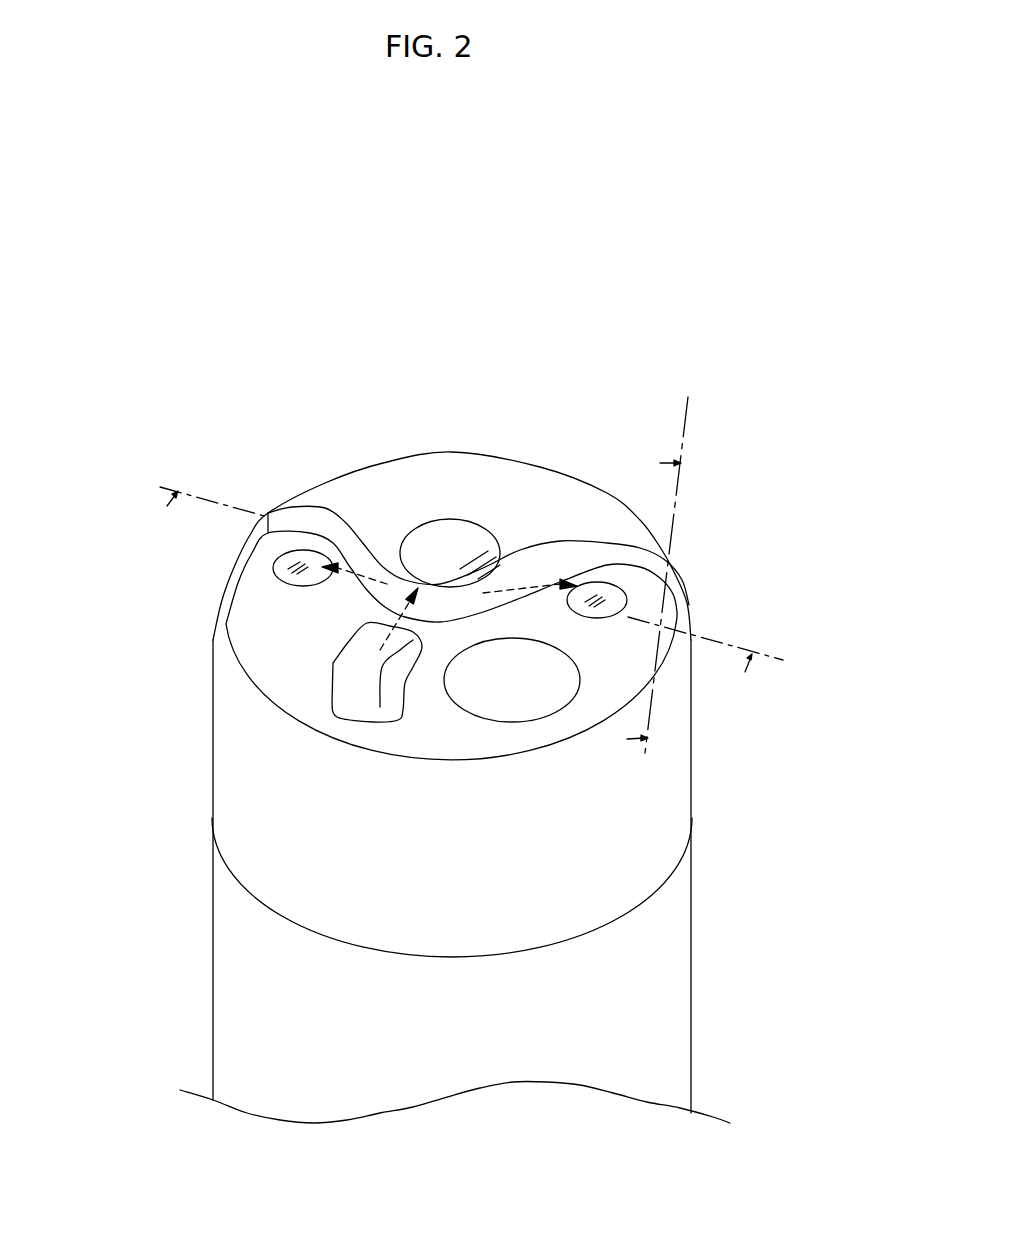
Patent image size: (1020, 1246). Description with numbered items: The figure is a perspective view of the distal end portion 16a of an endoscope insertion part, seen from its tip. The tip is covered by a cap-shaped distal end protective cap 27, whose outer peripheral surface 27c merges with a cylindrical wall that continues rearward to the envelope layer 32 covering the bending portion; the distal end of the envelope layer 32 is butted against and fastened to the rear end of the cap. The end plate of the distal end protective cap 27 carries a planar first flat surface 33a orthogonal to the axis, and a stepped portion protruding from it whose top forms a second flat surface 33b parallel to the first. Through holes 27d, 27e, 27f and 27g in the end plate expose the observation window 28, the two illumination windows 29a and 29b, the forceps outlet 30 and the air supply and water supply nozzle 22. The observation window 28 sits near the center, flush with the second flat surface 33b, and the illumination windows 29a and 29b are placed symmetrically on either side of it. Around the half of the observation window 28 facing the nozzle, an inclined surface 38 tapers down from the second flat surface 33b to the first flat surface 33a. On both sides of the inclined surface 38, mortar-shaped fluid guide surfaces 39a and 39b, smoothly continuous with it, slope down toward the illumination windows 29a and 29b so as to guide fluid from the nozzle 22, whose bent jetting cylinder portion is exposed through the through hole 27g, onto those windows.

The distal end portion 16a is at (575, 271).
The air supply and water supply nozzle 22 is at (347, 670).
The distal end protective cap 27 is at (667, 783).
The outer peripheral surface 27c is at (690, 607).
The through hole 27d is at (497, 547).
The through hole 27e is at (300, 586).
The through hole 27f is at (597, 617).
The through hole 27g is at (373, 720).
The observation window 28 is at (459, 530).
The illumination window 29a is at (300, 553).
The illumination window 29b is at (602, 587).
The forceps outlet 30 is at (525, 703).
The envelope layer 32 is at (683, 1007).
The first flat surface 33a is at (293, 668).
The second flat surface 33b is at (433, 483).
The inclined surface 38 is at (434, 605).
The fluid guide surface 39a is at (333, 532).
The fluid guide surface 39b is at (582, 558).